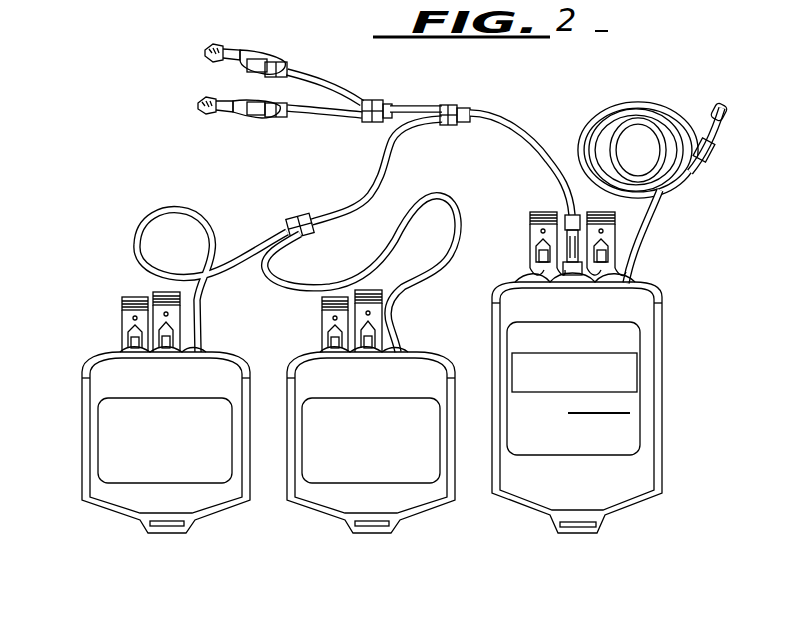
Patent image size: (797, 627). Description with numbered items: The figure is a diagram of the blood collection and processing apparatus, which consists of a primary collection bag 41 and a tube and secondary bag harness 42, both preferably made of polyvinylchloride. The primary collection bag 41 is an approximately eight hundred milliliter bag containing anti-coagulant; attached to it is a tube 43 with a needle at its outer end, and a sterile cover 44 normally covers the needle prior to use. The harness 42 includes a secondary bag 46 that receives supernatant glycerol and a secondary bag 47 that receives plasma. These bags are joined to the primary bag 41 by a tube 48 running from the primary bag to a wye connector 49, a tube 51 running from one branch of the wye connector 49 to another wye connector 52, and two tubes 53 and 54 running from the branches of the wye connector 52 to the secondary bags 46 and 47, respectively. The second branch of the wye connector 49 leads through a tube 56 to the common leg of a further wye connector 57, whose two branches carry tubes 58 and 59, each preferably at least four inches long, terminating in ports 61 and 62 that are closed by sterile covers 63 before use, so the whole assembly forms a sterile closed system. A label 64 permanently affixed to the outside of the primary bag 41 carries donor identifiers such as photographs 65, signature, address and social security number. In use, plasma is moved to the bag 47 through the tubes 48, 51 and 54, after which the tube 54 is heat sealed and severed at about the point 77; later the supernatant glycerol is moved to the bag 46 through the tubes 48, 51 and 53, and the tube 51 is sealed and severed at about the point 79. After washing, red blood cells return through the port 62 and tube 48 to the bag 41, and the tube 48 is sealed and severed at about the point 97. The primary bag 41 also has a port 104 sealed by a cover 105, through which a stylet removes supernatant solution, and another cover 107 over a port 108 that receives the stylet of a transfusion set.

The primary collection bag 41 is at (596, 380).
The tube and secondary bag harness 42 is at (672, 75).
The tube 43 is at (660, 208).
The sterile cover 44 is at (724, 135).
The secondary bag 46 is at (311, 523).
The secondary bag 47 is at (86, 519).
The tube 48 is at (528, 130).
The wye connector 49 is at (458, 108).
The tube 51 is at (403, 152).
The wye connector 52 is at (300, 214).
The tube 53 is at (287, 276).
The tube 54 is at (140, 224).
The tube 56 is at (415, 107).
The wye connector 57 is at (378, 101).
The tube 58 is at (325, 82).
The tube 59 is at (322, 114).
The port 61 is at (281, 62).
The port 62 is at (268, 108).
The sterile cover 63 is at (232, 60).
The label 64 is at (640, 450).
The photographs 65 is at (625, 382).
The heat seal and sever point 77 is at (265, 225).
The heat seal and sever point 79 is at (402, 120).
The heat seal and sever point 97 is at (560, 182).
The port 104 is at (605, 263).
The cover 105 is at (612, 233).
The cover 107 is at (528, 228).
The port 108 is at (537, 258).